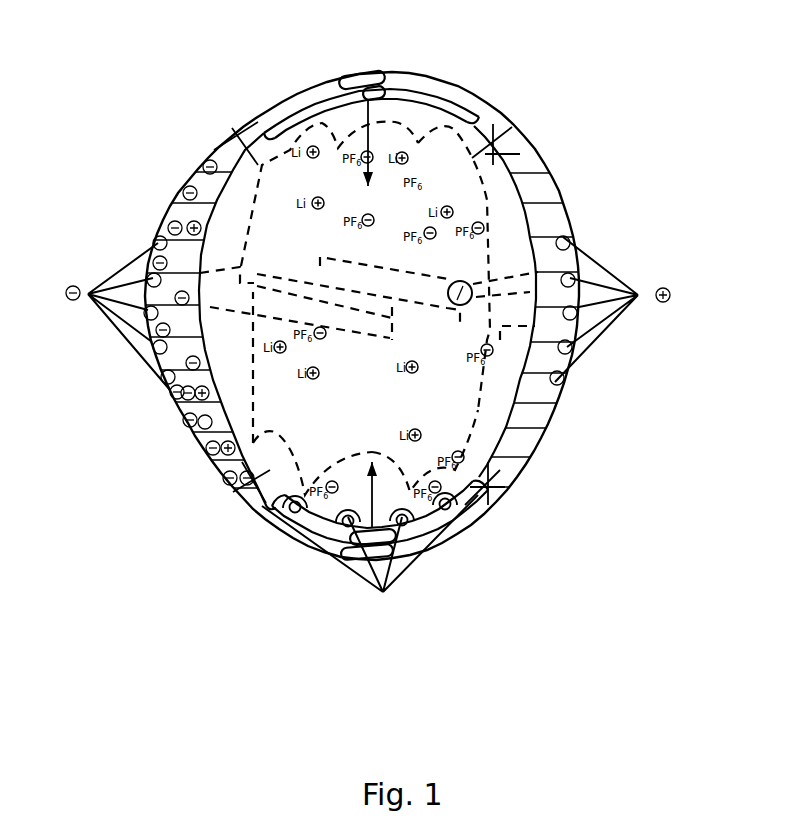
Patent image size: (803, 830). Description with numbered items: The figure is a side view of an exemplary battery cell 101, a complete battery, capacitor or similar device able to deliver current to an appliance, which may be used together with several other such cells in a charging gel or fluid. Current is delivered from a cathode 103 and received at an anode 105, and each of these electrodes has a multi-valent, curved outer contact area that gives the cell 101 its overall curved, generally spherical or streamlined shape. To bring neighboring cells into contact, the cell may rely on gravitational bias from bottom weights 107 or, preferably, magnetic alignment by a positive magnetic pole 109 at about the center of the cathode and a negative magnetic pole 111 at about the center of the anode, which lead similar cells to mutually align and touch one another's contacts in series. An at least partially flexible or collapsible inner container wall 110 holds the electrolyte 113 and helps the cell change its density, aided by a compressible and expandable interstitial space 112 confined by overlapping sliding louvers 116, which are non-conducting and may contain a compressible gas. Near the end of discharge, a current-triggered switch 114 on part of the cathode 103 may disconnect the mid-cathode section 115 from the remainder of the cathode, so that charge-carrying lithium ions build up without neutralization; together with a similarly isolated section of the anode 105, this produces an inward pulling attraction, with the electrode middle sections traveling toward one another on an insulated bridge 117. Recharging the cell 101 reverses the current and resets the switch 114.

The battery cell 101 is at (292, 579).
The cathode 103 is at (518, 506).
The anode 105 is at (185, 460).
The bottom weights 107 is at (370, 554).
The positive magnetic pole 109 is at (668, 282).
The inner container wall 110 is at (412, 125).
The negative magnetic pole 111 is at (64, 283).
The interstitial space 112 is at (332, 118).
The electrolyte 113 is at (450, 177).
The current-triggered switch 114 is at (470, 289).
The mid-cathode section 115 is at (437, 281).
The overlapping sliding louvers 116 is at (375, 92).
The insulated bridge 117 is at (408, 308).